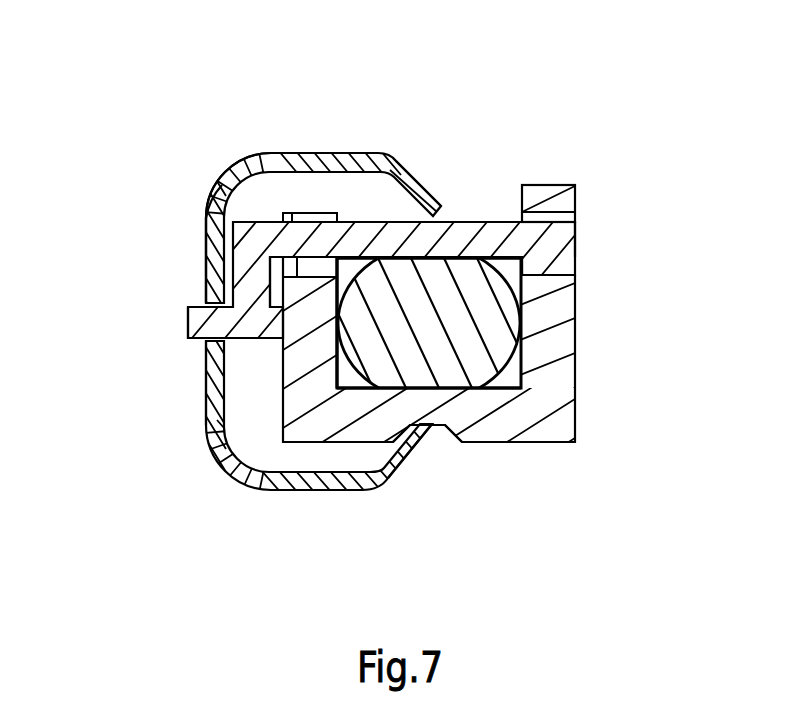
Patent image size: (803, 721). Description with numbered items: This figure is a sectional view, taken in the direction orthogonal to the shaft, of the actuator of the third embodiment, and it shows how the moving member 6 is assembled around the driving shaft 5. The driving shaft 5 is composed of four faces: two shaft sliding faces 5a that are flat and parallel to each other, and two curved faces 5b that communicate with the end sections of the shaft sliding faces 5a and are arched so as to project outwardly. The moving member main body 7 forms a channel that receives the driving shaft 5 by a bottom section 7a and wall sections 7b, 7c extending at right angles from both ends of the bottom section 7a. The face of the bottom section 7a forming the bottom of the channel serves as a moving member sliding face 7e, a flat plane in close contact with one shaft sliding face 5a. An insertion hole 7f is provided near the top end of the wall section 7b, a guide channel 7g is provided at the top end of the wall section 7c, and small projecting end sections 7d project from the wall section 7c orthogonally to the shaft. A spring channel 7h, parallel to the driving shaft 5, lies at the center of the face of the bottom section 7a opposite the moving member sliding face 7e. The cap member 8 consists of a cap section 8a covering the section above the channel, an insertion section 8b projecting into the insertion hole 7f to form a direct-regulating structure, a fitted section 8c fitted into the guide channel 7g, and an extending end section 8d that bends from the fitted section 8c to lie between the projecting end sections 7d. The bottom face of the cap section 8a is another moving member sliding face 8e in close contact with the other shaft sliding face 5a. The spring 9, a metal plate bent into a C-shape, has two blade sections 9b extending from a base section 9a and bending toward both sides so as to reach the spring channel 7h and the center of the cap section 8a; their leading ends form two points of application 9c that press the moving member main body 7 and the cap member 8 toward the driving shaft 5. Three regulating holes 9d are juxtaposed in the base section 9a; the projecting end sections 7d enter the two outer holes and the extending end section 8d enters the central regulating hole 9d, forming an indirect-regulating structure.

The driving shaft 5 is at (528, 325).
The shaft sliding face 5a is at (472, 275).
The curved face 5b is at (340, 272).
The moving member 6 is at (192, 163).
The moving member main body 7 is at (578, 418).
The bottom section 7a is at (542, 443).
The wall section 7b is at (553, 185).
The wall section 7c is at (299, 258).
The projecting end section 7d is at (272, 340).
The moving member sliding face 7e is at (540, 408).
The insertion hole 7f is at (577, 222).
The guide channel 7g is at (210, 212).
The spring channel 7h is at (447, 440).
The cap member 8 is at (385, 218).
The cap section 8a is at (492, 222).
The insertion section 8b is at (575, 238).
The fitted section 8c is at (292, 213).
The extending end section 8d is at (188, 320).
The moving member sliding face 8e is at (555, 297).
The spring 9 is at (245, 157).
The base section 9a is at (205, 252).
The blade section 9b is at (287, 153).
The point of application 9c is at (432, 205).
The regulating hole 9d is at (207, 341).